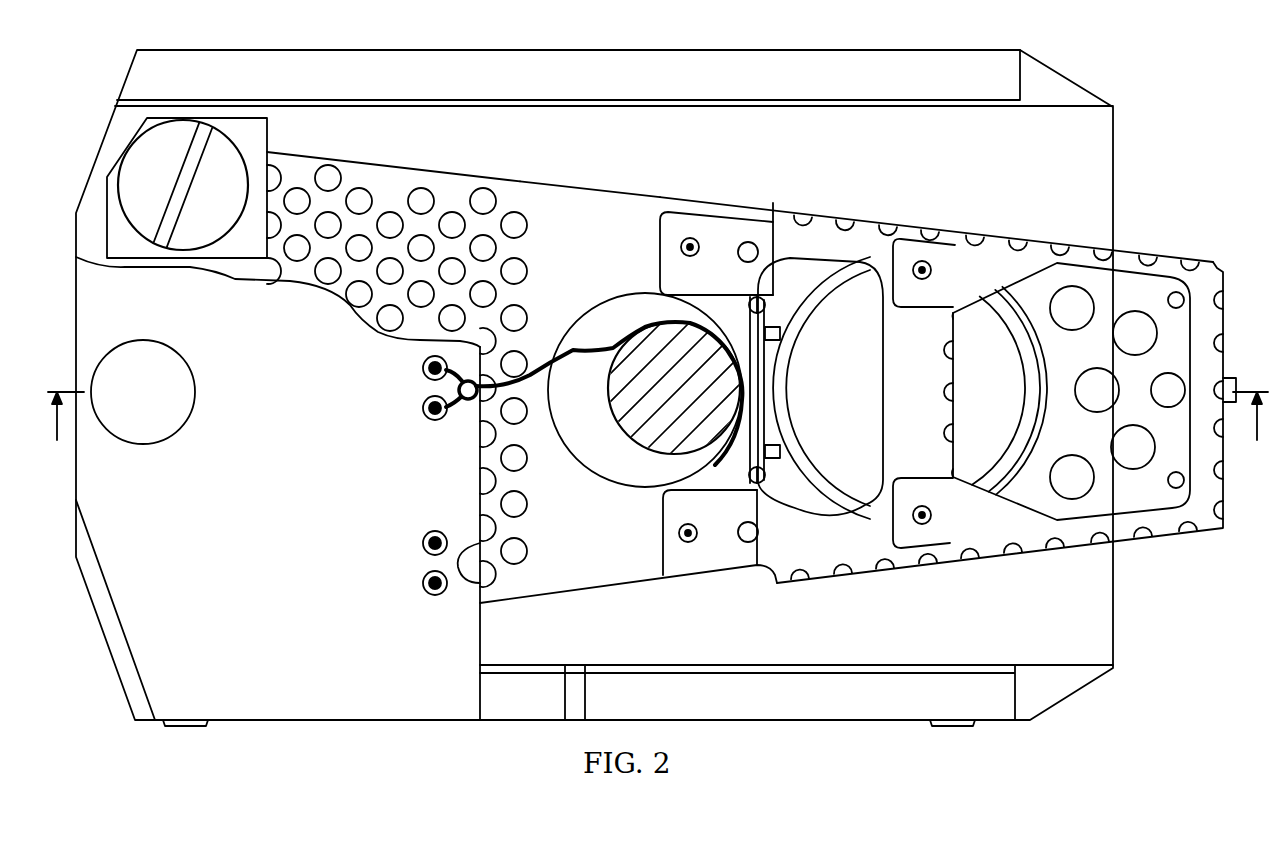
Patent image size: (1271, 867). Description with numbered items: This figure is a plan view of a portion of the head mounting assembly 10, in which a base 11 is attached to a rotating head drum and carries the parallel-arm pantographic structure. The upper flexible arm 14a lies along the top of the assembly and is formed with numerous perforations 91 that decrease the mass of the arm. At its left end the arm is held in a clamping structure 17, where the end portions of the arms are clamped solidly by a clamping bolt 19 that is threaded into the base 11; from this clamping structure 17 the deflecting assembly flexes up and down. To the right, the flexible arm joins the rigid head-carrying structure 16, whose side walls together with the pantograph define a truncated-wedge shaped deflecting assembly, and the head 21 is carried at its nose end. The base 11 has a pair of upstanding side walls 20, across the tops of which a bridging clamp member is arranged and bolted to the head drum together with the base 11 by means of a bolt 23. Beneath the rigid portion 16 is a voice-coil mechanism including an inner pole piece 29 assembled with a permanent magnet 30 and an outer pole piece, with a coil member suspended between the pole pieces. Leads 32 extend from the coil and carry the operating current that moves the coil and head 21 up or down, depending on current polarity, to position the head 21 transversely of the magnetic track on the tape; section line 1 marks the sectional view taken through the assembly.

The section line 1- 1 is at (656, 400).
The head mounting assembly 10 is at (610, 184).
The base 11 is at (1093, 148).
The upper flexible arm 14a is at (608, 254).
The rigid head-carrying structure 16 is at (882, 208).
The clamping structure 17 is at (104, 195).
The clamping bolt 19 is at (184, 121).
The upstanding side walls 20 is at (585, 52).
The head 21 is at (1223, 398).
The bolt 23 is at (643, 445).
The inner pole piece 29 is at (860, 392).
The permanent magnet 30 is at (1043, 425).
The leads 32 is at (545, 395).
The perforations 91 is at (452, 222).